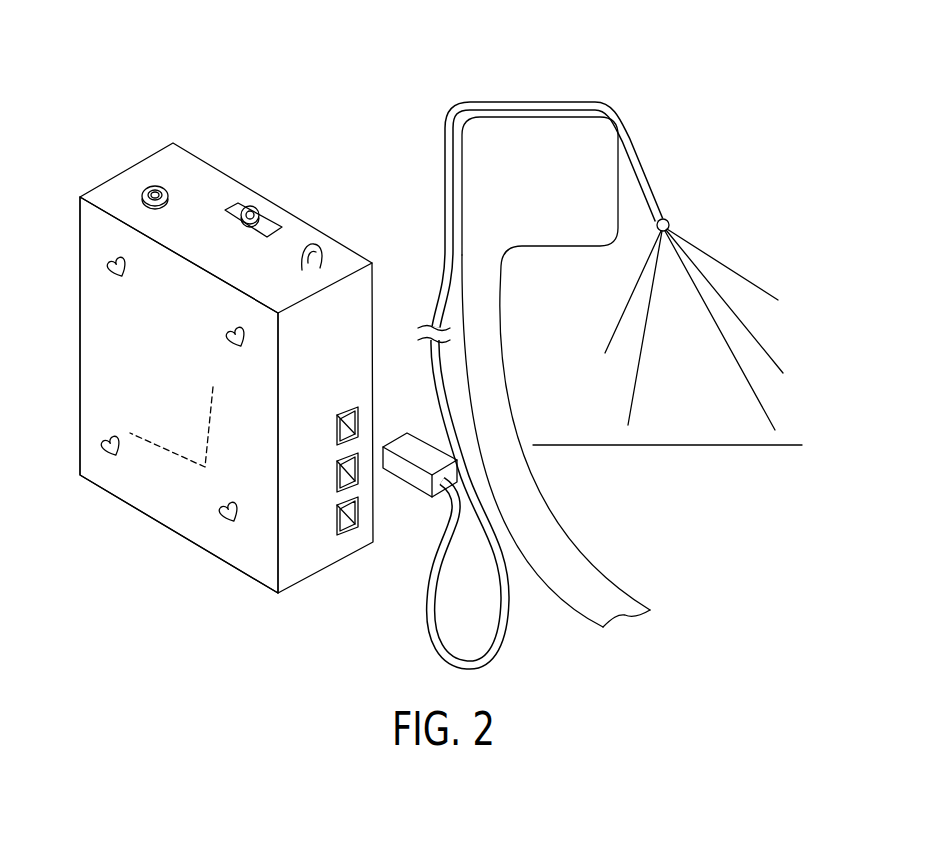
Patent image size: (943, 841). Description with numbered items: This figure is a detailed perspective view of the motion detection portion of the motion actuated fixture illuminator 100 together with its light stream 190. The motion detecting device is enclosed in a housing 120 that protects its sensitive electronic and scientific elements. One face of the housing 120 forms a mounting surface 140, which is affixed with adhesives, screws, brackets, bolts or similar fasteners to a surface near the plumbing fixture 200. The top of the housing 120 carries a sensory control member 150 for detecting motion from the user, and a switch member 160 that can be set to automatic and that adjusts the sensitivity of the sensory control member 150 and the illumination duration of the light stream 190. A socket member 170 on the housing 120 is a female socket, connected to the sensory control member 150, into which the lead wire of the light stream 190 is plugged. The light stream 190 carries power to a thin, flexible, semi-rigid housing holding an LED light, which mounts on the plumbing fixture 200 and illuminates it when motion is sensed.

The motion actuated fixture illuminator 100 is at (672, 67).
The housing 120 is at (182, 165).
The mounting surface 140 is at (92, 343).
The sensory control member 150 is at (312, 244).
The switch member 160 is at (252, 207).
The socket member 170 is at (347, 522).
The light stream 190 is at (648, 172).
The plumbing fixture 200 is at (577, 593).